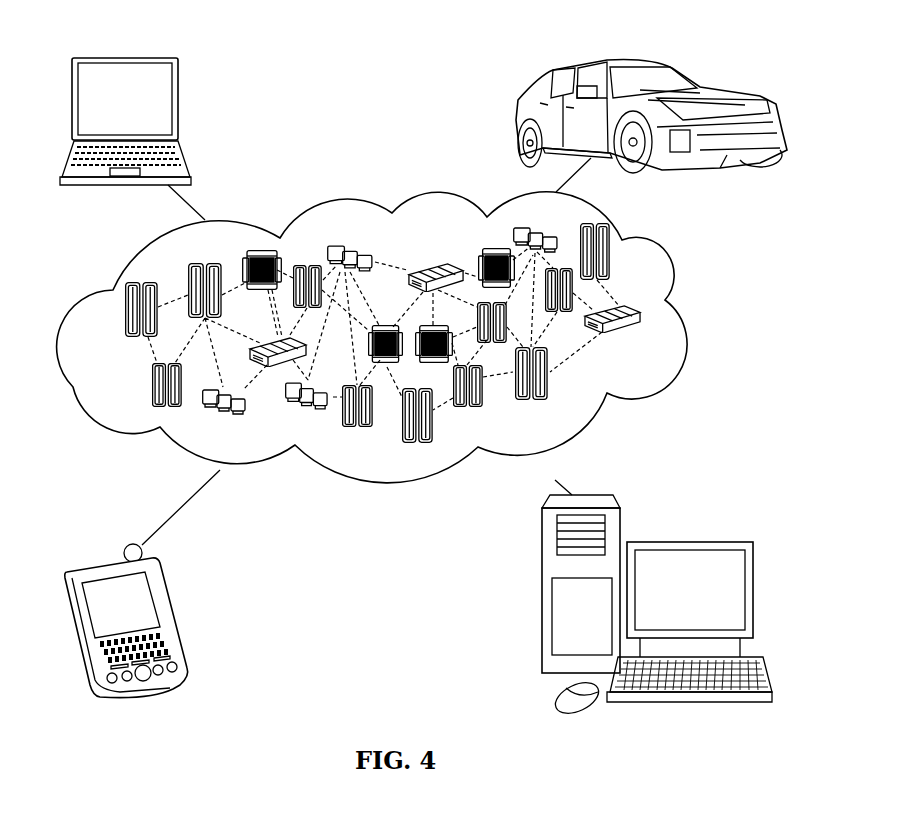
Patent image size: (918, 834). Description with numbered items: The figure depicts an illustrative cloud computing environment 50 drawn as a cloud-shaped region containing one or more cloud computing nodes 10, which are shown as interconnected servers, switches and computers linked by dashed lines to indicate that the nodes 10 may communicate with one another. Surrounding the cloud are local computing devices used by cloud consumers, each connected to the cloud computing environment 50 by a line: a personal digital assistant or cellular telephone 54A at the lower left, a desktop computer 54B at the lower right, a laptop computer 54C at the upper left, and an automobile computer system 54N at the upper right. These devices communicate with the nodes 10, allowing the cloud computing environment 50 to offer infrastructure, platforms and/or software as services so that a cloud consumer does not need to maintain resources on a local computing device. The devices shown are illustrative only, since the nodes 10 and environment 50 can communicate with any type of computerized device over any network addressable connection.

The cloud computing nodes 10 is at (395, 351).
The cloud computing environment 50 is at (688, 317).
The personal digital assistant (PDA) or cellular telephone 54A is at (174, 613).
The desktop computer 54B is at (688, 542).
The laptop computer 54C is at (181, 108).
The automobile computer system 54N is at (516, 121).